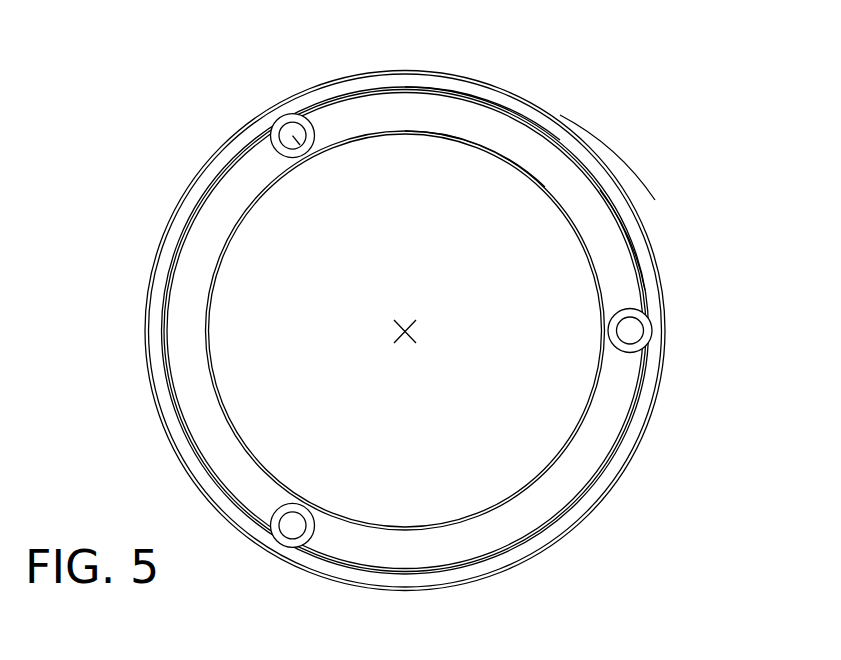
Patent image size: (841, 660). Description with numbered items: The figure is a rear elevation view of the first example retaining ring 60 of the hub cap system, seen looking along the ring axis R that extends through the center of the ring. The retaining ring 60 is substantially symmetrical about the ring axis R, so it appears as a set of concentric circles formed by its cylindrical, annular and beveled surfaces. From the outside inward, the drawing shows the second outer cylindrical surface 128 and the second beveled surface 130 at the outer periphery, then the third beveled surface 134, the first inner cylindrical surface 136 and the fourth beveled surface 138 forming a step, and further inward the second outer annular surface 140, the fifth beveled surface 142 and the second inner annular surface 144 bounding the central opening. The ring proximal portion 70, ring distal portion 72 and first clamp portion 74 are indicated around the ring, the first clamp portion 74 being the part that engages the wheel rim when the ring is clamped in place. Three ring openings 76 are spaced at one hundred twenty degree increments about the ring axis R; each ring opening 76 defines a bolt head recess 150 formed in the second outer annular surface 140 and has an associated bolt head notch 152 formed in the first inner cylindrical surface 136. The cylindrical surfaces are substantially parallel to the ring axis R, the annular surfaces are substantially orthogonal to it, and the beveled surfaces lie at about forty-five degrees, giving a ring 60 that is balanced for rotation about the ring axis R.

The retaining ring 60 is at (708, 92).
The ring proximal portion 70 is at (633, 190).
The ring distal portion 72 is at (640, 260).
The first clamp portion 74 is at (560, 133).
The ring openings 76 is at (302, 155).
The second outer cylindrical surface 128 is at (490, 82).
The second beveled surface 130 is at (405, 68).
The third beveled surface 134 is at (192, 215).
The first inner cylindrical surface 136 is at (170, 275).
The fourth beveled surface 138 is at (170, 373).
The second outer annular surface 140 is at (205, 397).
The fifth beveled surface 142 is at (228, 242).
The second inner annular surface 144 is at (490, 150).
The bolt head recess 150 is at (307, 135).
The bolt head notch 152 is at (287, 118).
The ring axis R is at (410, 332).